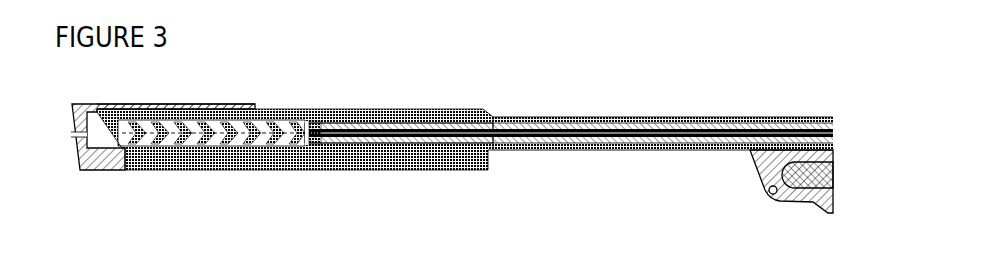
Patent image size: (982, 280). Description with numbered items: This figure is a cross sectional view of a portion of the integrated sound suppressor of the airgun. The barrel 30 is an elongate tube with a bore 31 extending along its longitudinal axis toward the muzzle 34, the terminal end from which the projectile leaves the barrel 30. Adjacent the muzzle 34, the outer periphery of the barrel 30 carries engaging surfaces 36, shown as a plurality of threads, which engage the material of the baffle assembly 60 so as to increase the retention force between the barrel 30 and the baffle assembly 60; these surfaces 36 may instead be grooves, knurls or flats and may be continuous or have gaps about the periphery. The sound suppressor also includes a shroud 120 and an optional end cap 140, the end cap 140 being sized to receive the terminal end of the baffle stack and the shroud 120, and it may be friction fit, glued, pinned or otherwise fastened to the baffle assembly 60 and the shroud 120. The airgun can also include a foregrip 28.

The foregrip 28 is at (797, 197).
The barrel 30 is at (677, 122).
The bore 31 is at (585, 128).
The muzzle 34 is at (308, 138).
The engaging surfaces 36 is at (318, 142).
The baffle assembly 60 is at (495, 170).
The shroud 120 is at (273, 105).
The end cap 140 is at (96, 168).